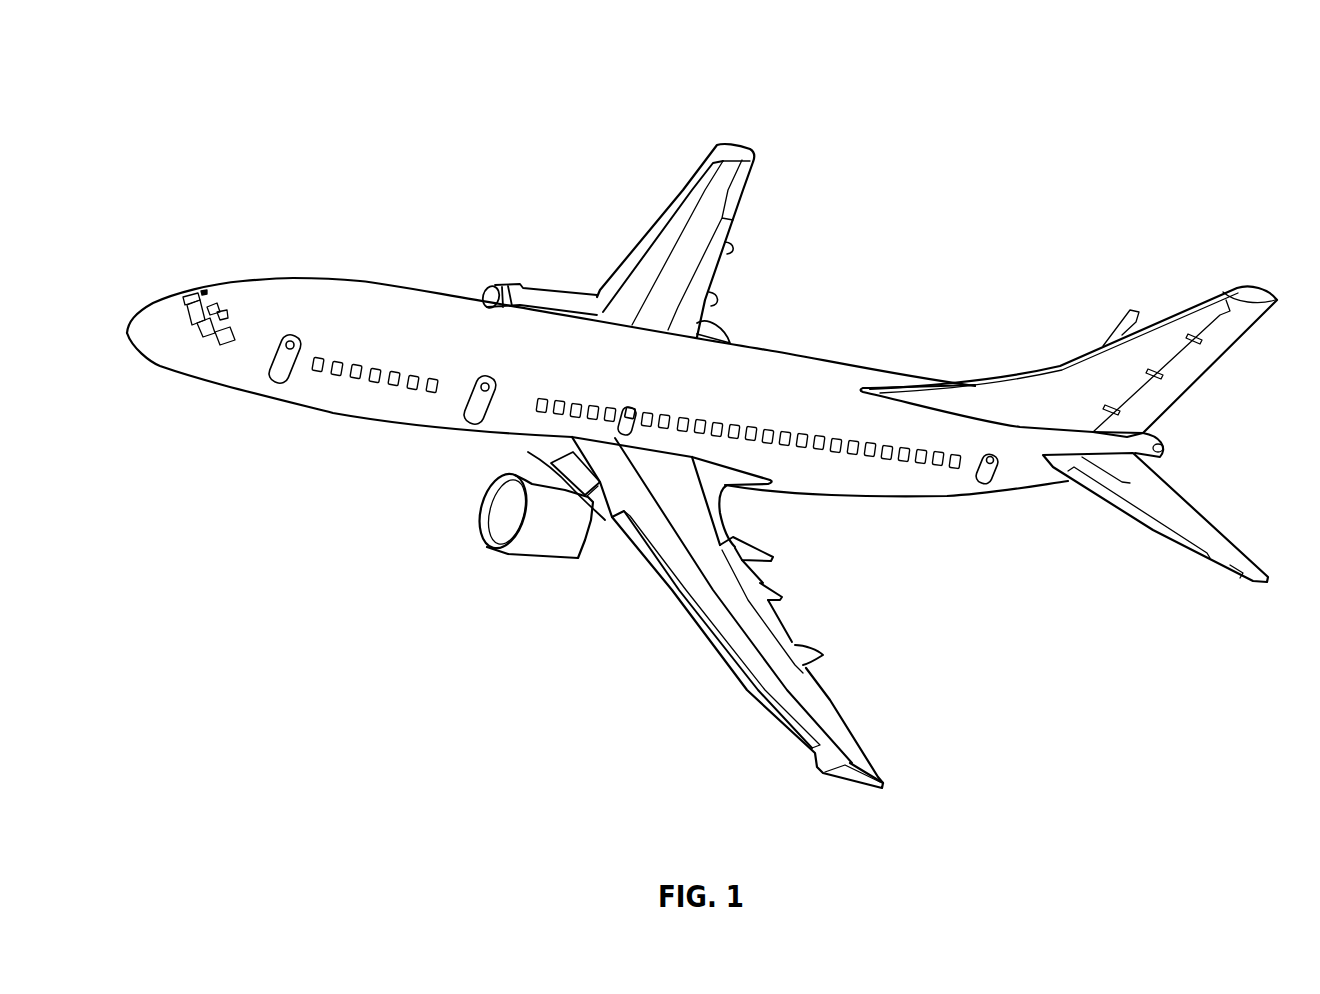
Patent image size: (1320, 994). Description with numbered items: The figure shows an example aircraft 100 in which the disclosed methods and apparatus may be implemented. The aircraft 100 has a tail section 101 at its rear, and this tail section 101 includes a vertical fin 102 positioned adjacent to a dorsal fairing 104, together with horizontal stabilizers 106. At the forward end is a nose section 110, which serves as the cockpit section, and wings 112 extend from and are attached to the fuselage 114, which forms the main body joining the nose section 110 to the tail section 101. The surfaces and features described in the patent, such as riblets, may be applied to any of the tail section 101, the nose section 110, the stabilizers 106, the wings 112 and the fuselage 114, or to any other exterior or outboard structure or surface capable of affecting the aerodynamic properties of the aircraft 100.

The aircraft 100 is at (190, 88).
The tail section 101 is at (1212, 250).
The vertical fin 102 is at (1108, 383).
The dorsal fairing 104 is at (993, 393).
The horizontal stabilizers 106 is at (1187, 527).
The nose section 110 is at (158, 343).
The wings 112 is at (747, 657).
The fuselage 114 is at (607, 347).